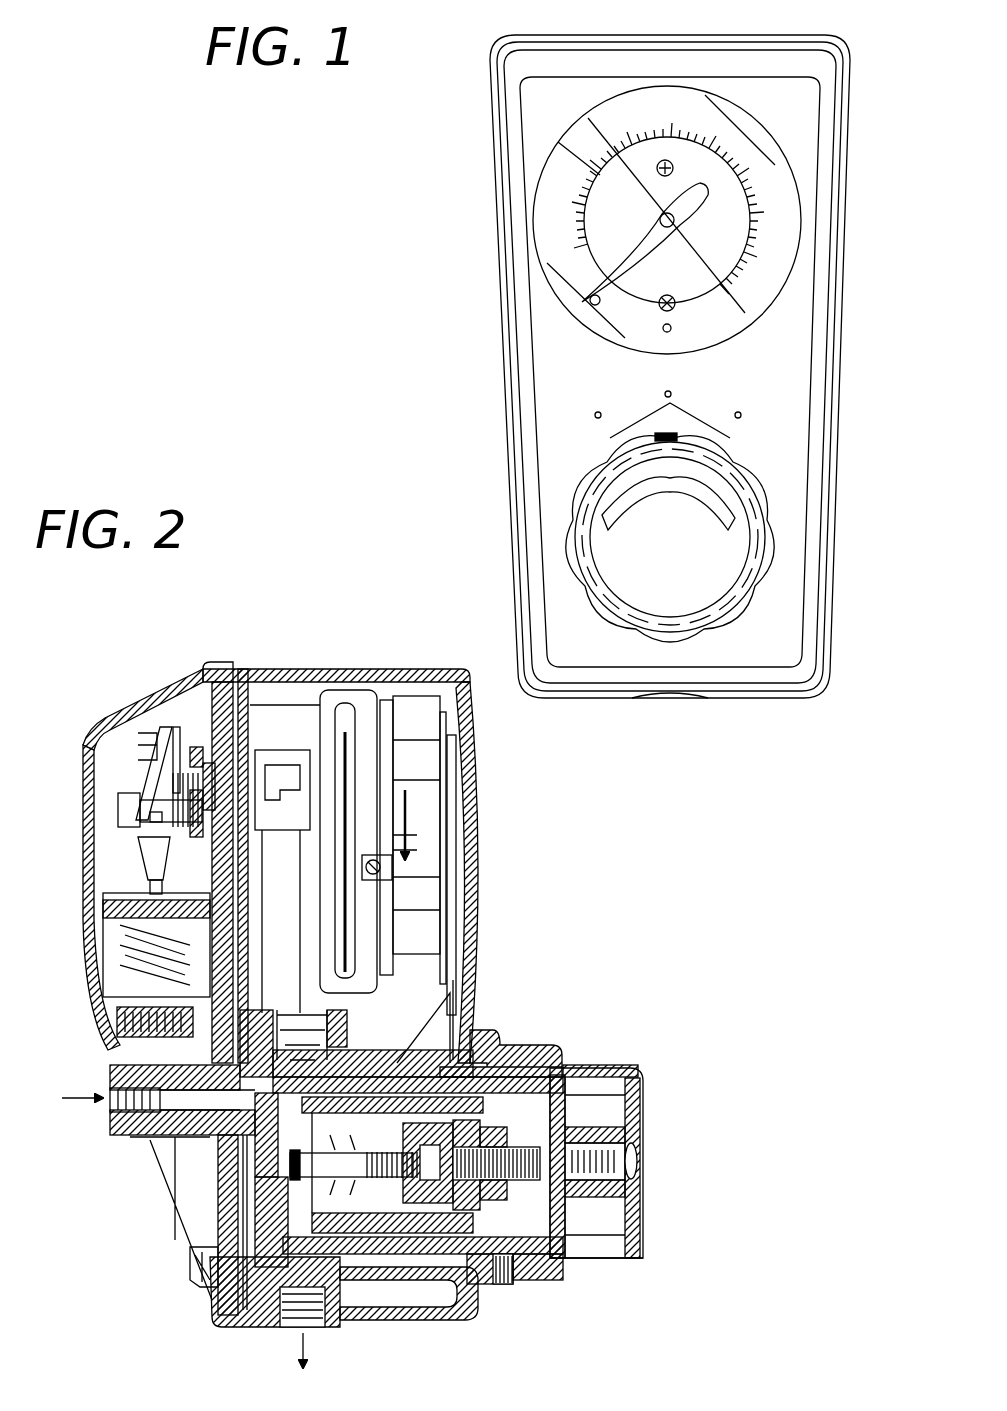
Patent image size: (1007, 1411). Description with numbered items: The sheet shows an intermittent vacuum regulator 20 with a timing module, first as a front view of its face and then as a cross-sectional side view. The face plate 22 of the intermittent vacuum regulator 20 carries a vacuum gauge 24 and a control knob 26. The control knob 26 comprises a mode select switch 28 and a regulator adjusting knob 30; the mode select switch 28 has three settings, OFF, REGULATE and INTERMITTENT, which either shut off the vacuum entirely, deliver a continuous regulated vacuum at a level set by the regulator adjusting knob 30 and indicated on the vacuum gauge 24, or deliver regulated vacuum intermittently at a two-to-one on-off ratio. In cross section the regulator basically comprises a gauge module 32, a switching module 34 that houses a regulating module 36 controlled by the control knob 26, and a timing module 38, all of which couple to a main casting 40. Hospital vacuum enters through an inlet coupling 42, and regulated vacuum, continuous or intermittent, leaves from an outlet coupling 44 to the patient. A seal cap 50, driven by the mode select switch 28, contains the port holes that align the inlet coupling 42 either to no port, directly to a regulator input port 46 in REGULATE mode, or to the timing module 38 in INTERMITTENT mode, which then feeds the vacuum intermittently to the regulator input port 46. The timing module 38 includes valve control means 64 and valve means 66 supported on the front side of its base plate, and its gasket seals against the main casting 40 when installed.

In FIG. 1, the intermittent vacuum regulator 20 is at (760, 35).
In FIG. 1, the face plate 22 is at (540, 115).
In FIG. 1, the vacuum gauge 24 is at (543, 187).
In FIG. 1, the control knob 26 is at (577, 460).
In FIG. 2, the control knob 26 is at (590, 1270).
In FIG. 2, the mode select switch 28 is at (518, 1045).
In FIG. 2, the regulator adjusting knob 30 is at (597, 1068).
In FIG. 2, the gauge module 32 is at (413, 717).
In FIG. 2, the switching module 34 is at (477, 1247).
In FIG. 2, the regulating module 36 is at (377, 1260).
In FIG. 2, the timing module 38 is at (115, 840).
In FIG. 2, the main casting 40 is at (103, 1043).
In FIG. 2, the inlet coupling 42 is at (103, 1115).
In FIG. 2, the outlet coupling 44 is at (290, 1327).
In FIG. 2, the regulator input port 46 is at (257, 1163).
In FIG. 2, the seal cap 50 is at (213, 1298).
In FIG. 2, the valve control means 64 is at (123, 753).
In FIG. 2, the valve means 66 is at (193, 713).